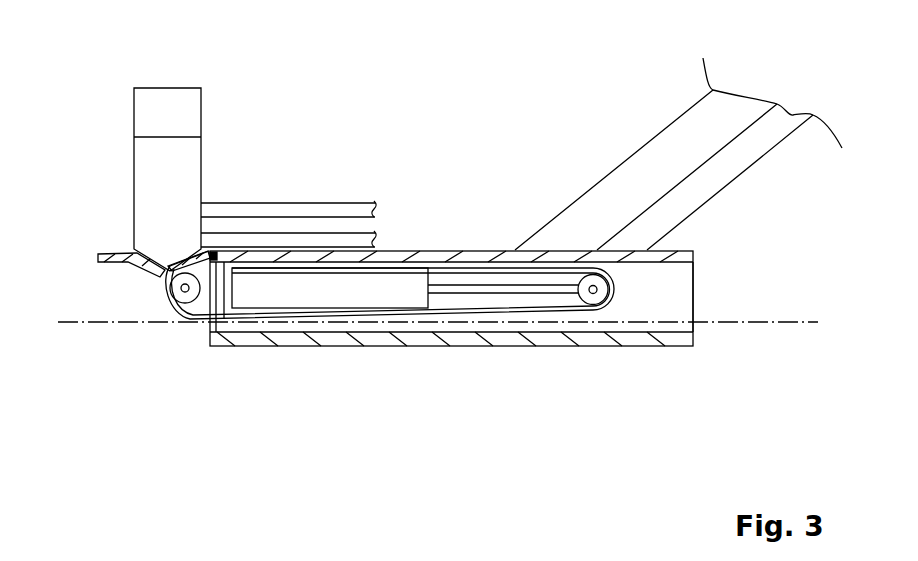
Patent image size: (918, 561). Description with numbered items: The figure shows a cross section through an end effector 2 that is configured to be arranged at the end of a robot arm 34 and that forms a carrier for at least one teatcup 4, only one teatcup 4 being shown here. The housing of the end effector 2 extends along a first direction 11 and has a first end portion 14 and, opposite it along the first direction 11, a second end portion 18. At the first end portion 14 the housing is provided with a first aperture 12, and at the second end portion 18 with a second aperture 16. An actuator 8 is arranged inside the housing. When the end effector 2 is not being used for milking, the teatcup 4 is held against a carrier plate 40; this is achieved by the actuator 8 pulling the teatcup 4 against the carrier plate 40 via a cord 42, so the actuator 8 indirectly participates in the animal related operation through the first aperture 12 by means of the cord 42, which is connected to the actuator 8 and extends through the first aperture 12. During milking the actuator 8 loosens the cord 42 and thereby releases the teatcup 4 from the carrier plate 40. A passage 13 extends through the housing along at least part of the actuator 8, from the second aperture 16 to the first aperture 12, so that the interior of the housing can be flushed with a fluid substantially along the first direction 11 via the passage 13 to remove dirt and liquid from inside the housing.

The end effector 2 is at (367, 113).
The teatcup 4 is at (152, 167).
The carrier plate 40 is at (112, 264).
The cord 42 is at (208, 320).
The first aperture 12 is at (195, 327).
The second aperture 16 is at (712, 292).
The first end portion 14 is at (245, 372).
The second end portion 18 is at (649, 383).
The passage 13 is at (340, 328).
The actuator 8 is at (348, 290).
The first direction 11 is at (735, 322).
The robot arm 34 is at (712, 177).